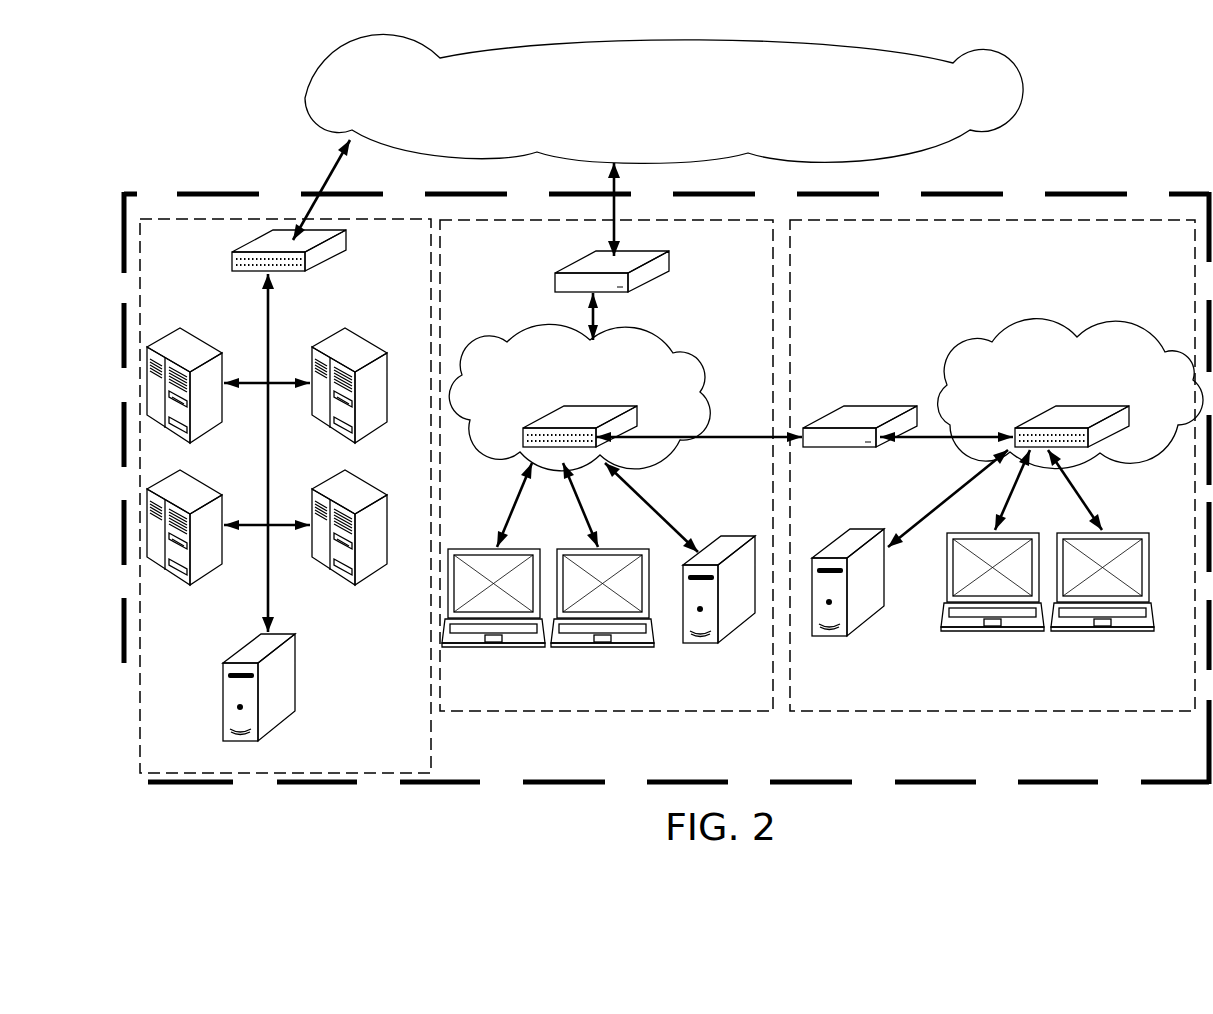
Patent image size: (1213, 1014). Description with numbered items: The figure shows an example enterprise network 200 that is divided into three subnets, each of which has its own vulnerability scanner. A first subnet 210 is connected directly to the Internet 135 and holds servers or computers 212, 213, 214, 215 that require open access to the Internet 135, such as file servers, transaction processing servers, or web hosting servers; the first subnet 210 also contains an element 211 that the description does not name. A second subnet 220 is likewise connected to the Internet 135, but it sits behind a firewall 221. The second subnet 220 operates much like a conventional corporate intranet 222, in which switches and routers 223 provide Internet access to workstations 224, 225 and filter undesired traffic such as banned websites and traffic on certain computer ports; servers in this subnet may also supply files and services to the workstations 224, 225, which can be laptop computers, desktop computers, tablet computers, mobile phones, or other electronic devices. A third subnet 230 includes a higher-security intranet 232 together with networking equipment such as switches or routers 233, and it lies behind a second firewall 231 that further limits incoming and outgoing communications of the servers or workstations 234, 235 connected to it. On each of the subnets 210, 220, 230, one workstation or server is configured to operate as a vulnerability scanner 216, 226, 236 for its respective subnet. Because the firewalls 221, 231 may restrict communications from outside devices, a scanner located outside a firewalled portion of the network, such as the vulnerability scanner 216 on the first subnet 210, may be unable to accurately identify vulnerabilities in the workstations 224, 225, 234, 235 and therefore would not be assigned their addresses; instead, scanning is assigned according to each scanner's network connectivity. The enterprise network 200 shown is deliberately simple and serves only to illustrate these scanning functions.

The enterprise network 200 is at (199, 172).
The Internet 135 is at (654, 125).
The first subnet 210 is at (271, 766).
The router 211 is at (345, 243).
The server or computer 212 is at (204, 343).
The server or computer 213 is at (369, 343).
The server or computer 214 is at (204, 485).
The server or computer 215 is at (369, 485).
The vulnerability scanner 216 is at (297, 678).
The second subnet 220 is at (590, 704).
The firewall 221 is at (670, 261).
The intranet 222 is at (569, 394).
The switches and routers 223 is at (537, 419).
The workstation 224 is at (488, 645).
The workstation 225 is at (597, 645).
The vulnerability scanner 226 is at (722, 637).
The third subnet 230 is at (982, 704).
The second firewall 231 is at (877, 407).
The higher-security intranet 232 is at (1055, 393).
The switches or routers 233 is at (1035, 420).
The workstation 234 is at (997, 632).
The workstation 235 is at (1107, 632).
The vulnerability scanner 236 is at (847, 630).